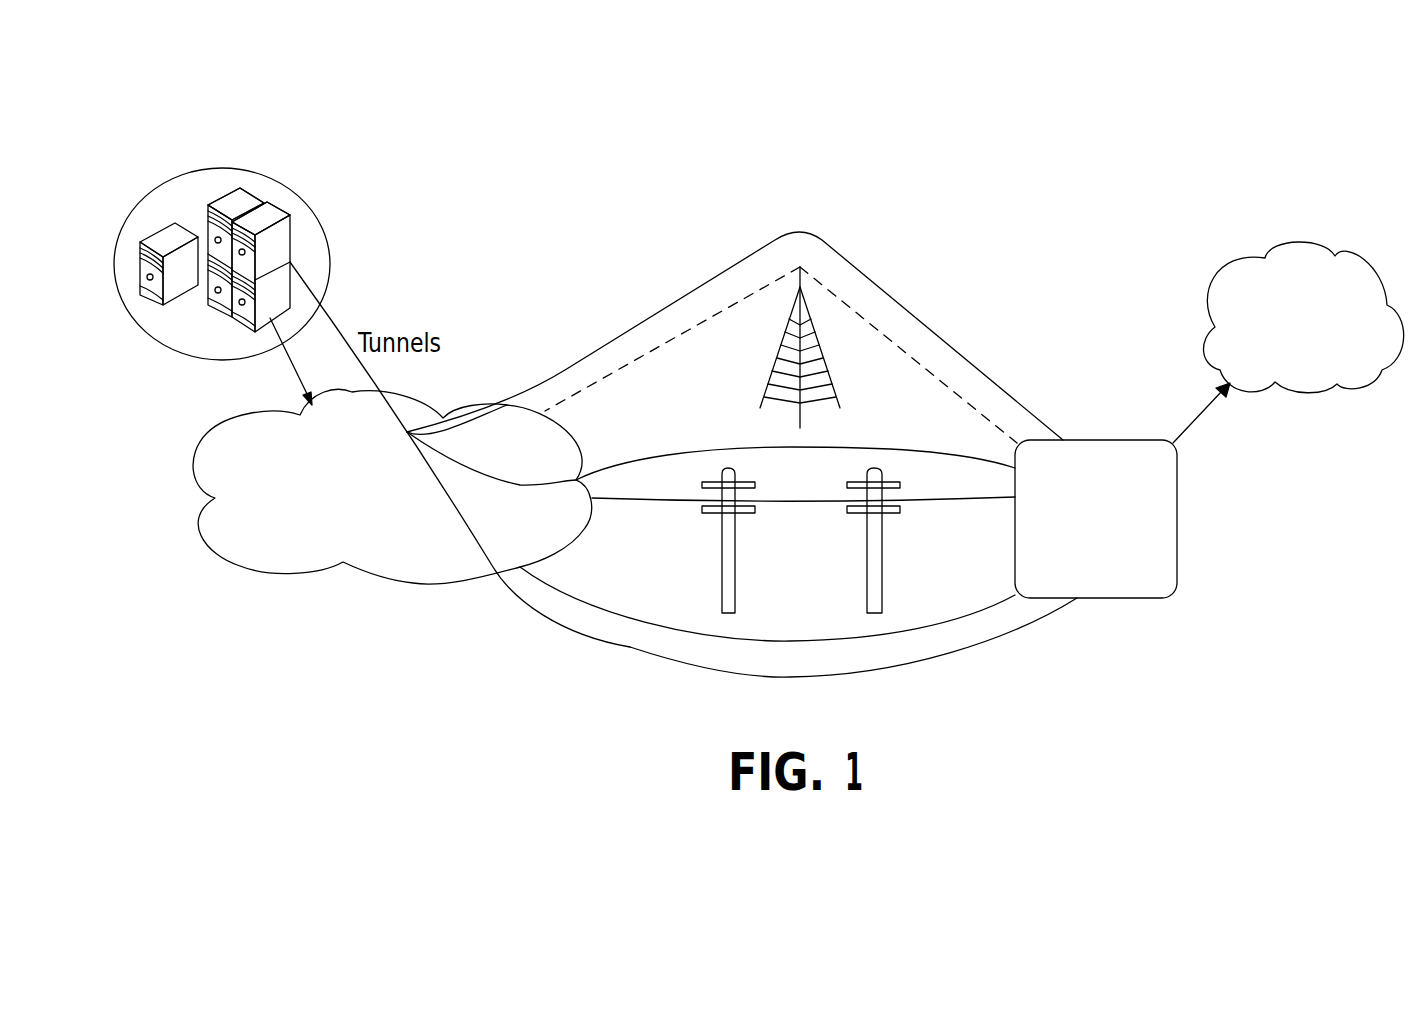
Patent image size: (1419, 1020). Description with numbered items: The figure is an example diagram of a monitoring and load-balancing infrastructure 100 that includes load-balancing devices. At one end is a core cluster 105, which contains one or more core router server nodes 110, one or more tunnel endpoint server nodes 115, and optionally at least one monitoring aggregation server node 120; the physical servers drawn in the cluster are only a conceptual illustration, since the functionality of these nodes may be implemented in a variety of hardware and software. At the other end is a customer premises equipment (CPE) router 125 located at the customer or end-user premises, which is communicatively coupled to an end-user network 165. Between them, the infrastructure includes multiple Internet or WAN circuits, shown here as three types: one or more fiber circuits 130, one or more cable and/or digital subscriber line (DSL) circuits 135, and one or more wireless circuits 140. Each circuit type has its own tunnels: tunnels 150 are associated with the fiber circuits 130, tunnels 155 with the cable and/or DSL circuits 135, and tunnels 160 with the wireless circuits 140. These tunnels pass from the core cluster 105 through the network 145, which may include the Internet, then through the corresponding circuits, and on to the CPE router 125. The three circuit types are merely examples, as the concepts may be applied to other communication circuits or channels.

The monitoring and load-balancing infrastructure 100 is at (1045, 162).
The core cluster 105 is at (222, 168).
The core router server nodes 110 is at (220, 311).
The tunnel endpoint server nodes 115 is at (280, 208).
The monitoring aggregation server node 120 is at (165, 222).
The customer premises equipment (CPE) router 125 is at (1115, 568).
The fiber circuits 130 is at (797, 637).
The cable and/or DSL circuits 135 is at (945, 501).
The wireless circuits 140 is at (957, 400).
The network 145 is at (362, 526).
The tunnels associated with fiber circuits 150 is at (657, 659).
The tunnels associated with cable and/or DSL circuits 155 is at (693, 452).
The tunnels associated with wireless circuits 160 is at (620, 336).
The end-user network 165 is at (1323, 373).